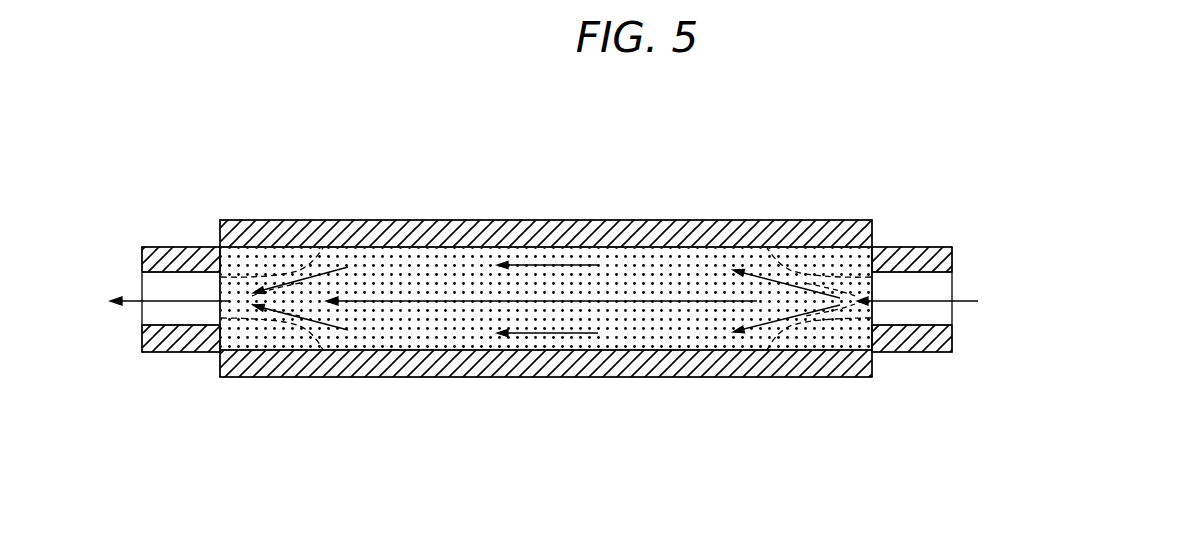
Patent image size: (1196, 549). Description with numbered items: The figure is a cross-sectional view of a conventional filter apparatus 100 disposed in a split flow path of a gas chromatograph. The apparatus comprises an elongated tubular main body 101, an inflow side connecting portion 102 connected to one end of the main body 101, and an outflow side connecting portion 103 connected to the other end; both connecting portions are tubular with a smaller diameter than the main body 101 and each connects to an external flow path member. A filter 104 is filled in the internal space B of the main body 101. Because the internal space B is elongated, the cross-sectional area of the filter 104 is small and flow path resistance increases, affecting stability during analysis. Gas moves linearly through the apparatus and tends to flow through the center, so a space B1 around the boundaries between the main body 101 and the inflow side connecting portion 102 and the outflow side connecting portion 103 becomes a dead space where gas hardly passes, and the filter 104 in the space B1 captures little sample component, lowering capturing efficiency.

The filter apparatus 100 is at (898, 153).
The main body 101 is at (563, 221).
The inflow side connecting portion 102 is at (913, 353).
The outflow side connecting portion 103 is at (162, 353).
The filter 104 is at (370, 268).
The internal space B is at (676, 263).
The space B1 is at (318, 258).